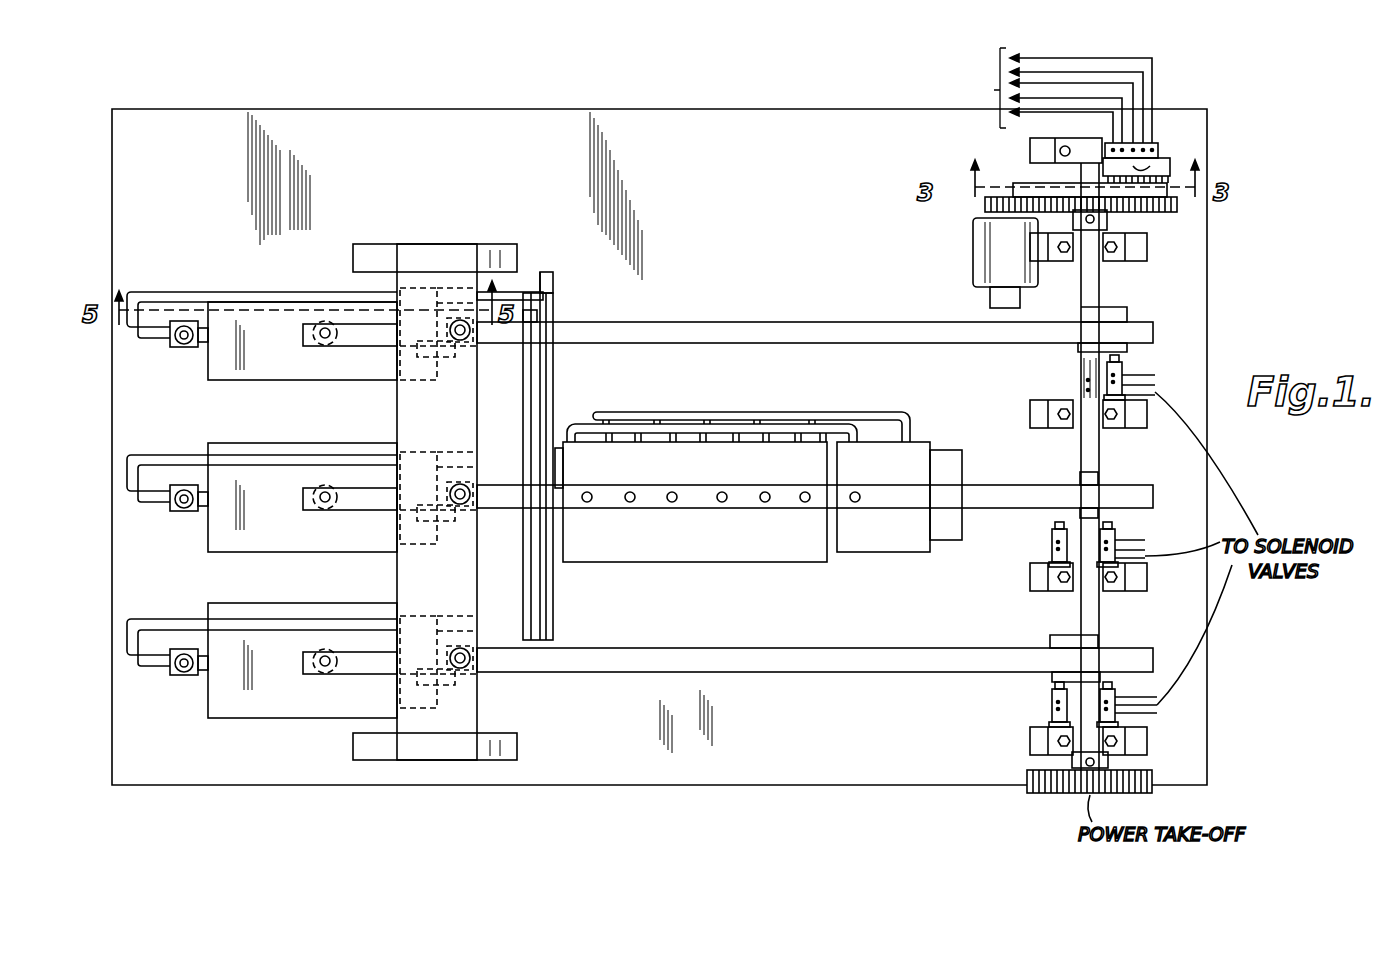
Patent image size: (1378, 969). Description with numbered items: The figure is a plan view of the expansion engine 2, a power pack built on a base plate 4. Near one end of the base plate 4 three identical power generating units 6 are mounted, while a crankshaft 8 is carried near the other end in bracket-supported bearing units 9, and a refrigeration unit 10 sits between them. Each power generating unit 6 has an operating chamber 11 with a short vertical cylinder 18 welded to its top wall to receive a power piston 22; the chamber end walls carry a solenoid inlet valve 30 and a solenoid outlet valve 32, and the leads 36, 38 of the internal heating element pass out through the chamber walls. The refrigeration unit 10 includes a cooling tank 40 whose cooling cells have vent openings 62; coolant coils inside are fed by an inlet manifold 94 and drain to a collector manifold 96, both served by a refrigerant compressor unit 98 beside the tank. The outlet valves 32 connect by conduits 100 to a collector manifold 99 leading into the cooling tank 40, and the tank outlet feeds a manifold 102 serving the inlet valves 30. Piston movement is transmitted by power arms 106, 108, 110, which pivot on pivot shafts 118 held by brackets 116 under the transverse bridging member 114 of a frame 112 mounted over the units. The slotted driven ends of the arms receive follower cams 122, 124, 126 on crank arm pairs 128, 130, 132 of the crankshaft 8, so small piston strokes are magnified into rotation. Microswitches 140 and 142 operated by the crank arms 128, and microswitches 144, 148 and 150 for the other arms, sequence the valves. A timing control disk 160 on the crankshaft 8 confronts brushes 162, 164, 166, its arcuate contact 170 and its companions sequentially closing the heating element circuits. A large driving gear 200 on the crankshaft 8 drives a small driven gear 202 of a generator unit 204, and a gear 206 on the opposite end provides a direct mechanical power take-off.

The expansion engine 2 is at (1216, 168).
The base plate 4 is at (720, 118).
The power generating unit 6 is at (185, 375).
The crankshaft 8 is at (1100, 286).
The bearing unit 9 is at (1120, 246).
The refrigeration unit 10 is at (722, 402).
The operating chamber 11 is at (258, 380).
The vertical cylinder 18 is at (323, 346).
The power piston 22 is at (322, 322).
The solenoid inlet valve 30 is at (470, 350).
The solenoid outlet valve 32 is at (175, 348).
The lead 36 is at (1018, 75).
The lead 38 is at (1068, 90).
The cooling tank 40 is at (691, 502).
The vent opening 62 is at (765, 500).
The inlet manifold 94 is at (840, 412).
The collector manifold 96 is at (578, 425).
The refrigerant compressor unit 98 is at (882, 555).
The collector manifold 99 is at (553, 366).
The conduit 100 is at (176, 292).
The manifold 102 is at (528, 610).
The power arm 106 is at (805, 322).
The power arm 108 is at (655, 486).
The power arm 110 is at (770, 648).
The frame 112 is at (508, 246).
The transverse bridging member 114 is at (470, 385).
The bracket 116 is at (445, 315).
The pivot shaft 118 is at (425, 378).
The follower cam 122 is at (1127, 316).
The follower cam 124 is at (1095, 489).
The follower cam 126 is at (1052, 678).
The crank arm pair 128 is at (1115, 310).
The crank arm pair 130 is at (1082, 476).
The crank arm pair 132 is at (1060, 638).
The VALVES CLOSE microswitch 140 is at (1127, 372).
The VALVES OPEN microswitch 142 is at (1080, 386).
The VALVES CLOSE microswitch 144 is at (1113, 536).
The VALVES OPEN microswitch 148 is at (1052, 540).
The VALVES OPEN microswitch 150 is at (1120, 702).
The timing control disk 160 is at (1180, 205).
The brush 162 is at (1148, 140).
The brush 164 is at (1158, 160).
The brush 166 is at (1085, 136).
The arcuate contact 170 is at (1020, 190).
The large driving gear 200 is at (1180, 211).
The small driven gear 202 is at (985, 211).
The generator unit 204 is at (990, 241).
The gear 206 is at (1038, 796).